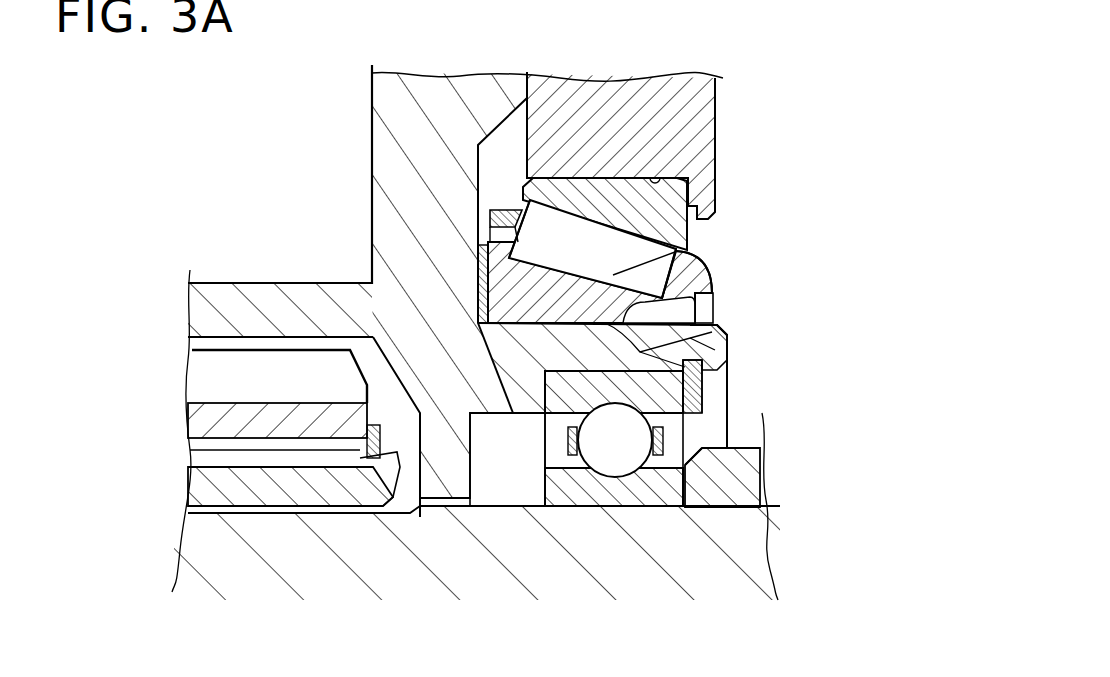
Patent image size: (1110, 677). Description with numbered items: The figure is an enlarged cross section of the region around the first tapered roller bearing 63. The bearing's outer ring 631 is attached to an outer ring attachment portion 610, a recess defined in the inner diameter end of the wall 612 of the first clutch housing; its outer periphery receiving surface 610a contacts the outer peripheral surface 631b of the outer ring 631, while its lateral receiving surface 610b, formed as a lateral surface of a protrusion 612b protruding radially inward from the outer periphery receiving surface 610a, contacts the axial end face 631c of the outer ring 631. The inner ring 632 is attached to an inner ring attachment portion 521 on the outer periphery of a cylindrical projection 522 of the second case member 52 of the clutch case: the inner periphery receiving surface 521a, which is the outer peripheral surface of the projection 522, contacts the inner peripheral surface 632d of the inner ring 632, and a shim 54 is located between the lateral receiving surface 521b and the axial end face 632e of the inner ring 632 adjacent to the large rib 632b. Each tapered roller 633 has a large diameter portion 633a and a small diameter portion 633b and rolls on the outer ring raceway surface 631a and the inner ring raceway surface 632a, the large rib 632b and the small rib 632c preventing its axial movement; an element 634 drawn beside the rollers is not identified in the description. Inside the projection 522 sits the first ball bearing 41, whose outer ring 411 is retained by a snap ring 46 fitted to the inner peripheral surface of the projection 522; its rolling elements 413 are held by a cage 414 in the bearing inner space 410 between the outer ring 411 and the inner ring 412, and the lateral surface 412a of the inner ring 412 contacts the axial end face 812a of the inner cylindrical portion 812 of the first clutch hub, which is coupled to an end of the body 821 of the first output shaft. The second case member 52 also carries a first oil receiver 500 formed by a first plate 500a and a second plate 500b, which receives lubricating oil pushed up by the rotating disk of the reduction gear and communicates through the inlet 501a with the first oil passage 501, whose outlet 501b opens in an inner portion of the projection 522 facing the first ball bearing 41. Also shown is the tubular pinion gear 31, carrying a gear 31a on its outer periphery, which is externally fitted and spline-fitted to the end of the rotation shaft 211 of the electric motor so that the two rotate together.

The pinion gear 31 is at (195, 423).
The gear 31a is at (205, 379).
The first ball bearing 41 is at (683, 518).
The snap ring 46 is at (702, 397).
The second case member 52 is at (479, 250).
The shim 54 is at (483, 256).
The first tapered roller bearing 63 is at (571, 164).
The rotation shaft 211 is at (203, 488).
The bearing inner space 410 is at (654, 526).
The outer ring 411 is at (563, 393).
The inner ring 412 is at (643, 490).
The lateral surface 412a is at (672, 462).
The rolling elements 413 is at (615, 465).
The cage 414 is at (577, 463).
The first oil receiver 500 is at (230, 251).
The first plate 500a is at (212, 275).
The second plate 500b is at (219, 315).
The first oil passage 501 is at (456, 404).
The inlet 501a is at (478, 318).
The outlet 501b is at (507, 459).
The inner ring attachment portion 521 is at (727, 323).
The inner periphery receiving surface 521a is at (690, 338).
The lateral receiving surface 521b is at (479, 294).
The projection 522 is at (730, 345).
The outer ring attachment portion 610 is at (718, 152).
The outer periphery receiving surface 610a is at (660, 184).
The lateral receiving surface 610b is at (690, 171).
The wall 612 is at (707, 100).
The protrusion 612b is at (703, 215).
The outer ring 631 is at (641, 220).
The outer ring raceway surface 631a is at (562, 221).
The outer peripheral surface 631b is at (610, 178).
The axial end face 631c is at (688, 210).
The inner ring 632 is at (556, 312).
The inner ring raceway surface 632a is at (678, 259).
The large rib 632b is at (500, 243).
The small rib 632c is at (713, 292).
The inner peripheral surface 632d is at (702, 377).
The axial end face 632e is at (486, 298).
The tapered roller 633 is at (599, 256).
The large diameter portion 633a is at (529, 199).
The small diameter portion 633b is at (670, 272).
The cage 634 is at (500, 212).
The inner cylindrical portion 812 is at (752, 480).
The axial end face 812a is at (695, 490).
The body 821 is at (747, 563).